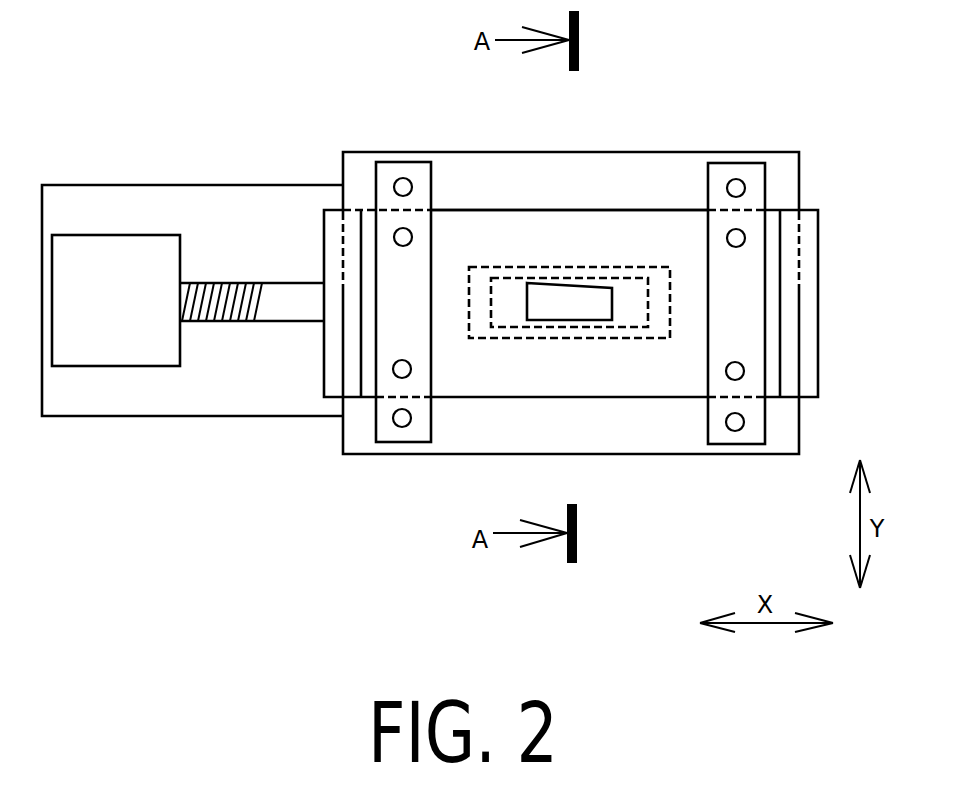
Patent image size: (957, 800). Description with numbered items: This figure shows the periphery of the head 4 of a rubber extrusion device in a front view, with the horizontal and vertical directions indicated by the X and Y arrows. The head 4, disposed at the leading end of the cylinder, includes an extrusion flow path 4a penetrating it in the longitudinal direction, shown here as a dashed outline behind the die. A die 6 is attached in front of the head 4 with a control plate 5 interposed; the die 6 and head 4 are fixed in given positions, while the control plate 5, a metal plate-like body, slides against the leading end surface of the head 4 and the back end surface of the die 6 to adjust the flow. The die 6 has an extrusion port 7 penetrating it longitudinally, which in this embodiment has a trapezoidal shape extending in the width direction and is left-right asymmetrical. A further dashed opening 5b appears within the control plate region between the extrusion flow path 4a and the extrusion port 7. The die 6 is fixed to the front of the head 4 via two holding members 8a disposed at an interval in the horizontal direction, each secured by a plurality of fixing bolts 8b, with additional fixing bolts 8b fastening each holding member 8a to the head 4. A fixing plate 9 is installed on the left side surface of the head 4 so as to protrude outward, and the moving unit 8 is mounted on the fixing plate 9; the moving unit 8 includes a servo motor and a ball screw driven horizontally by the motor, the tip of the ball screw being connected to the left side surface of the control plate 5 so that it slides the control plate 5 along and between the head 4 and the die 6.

The head 4 is at (346, 139).
The extrusion flow path 4a is at (470, 320).
The control plate 5 is at (813, 196).
The stage opening 5b is at (648, 318).
The die 6 is at (610, 196).
The extrusion port 7 is at (540, 319).
The moving unit 8 is at (242, 253).
The holding member 8a is at (414, 268).
The fixing bolt 8b is at (404, 180).
The fixing plate 9 is at (127, 197).